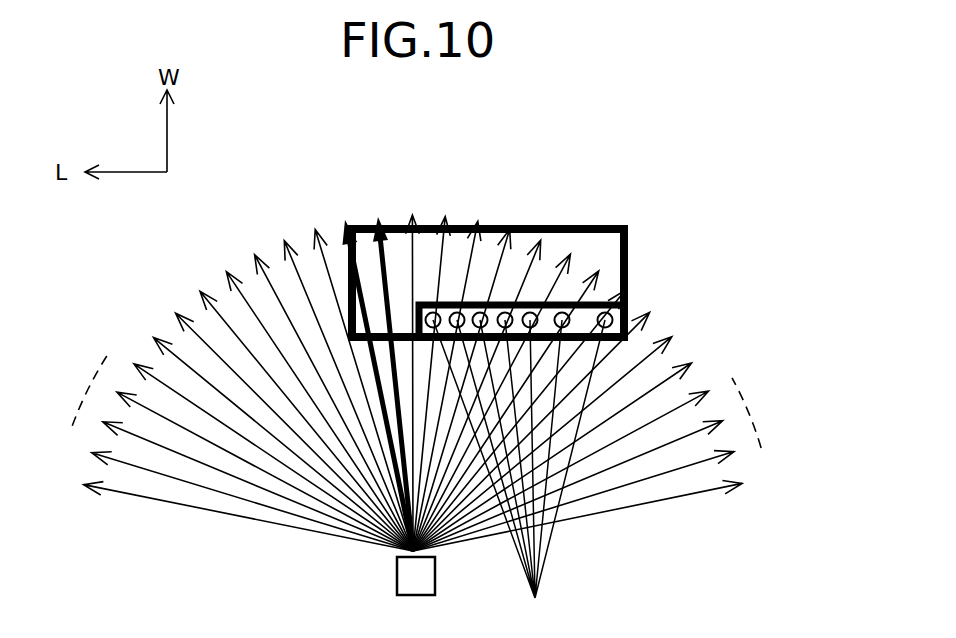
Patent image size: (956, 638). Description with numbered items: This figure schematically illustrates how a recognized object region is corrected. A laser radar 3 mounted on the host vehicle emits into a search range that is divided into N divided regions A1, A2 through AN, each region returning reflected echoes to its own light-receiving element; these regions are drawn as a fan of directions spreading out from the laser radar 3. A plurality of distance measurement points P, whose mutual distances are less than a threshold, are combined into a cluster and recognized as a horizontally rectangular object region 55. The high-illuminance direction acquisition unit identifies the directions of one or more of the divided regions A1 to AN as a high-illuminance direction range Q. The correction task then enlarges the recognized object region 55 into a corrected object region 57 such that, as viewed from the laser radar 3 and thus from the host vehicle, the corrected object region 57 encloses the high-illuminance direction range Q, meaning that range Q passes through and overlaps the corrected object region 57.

The corrected object region 57 is at (566, 227).
The object region 55 is at (606, 301).
The laser radar 3 is at (397, 575).
The high-illuminance direction range Q is at (388, 210).
The distance measurement points P is at (519, 475).
The divided region A1 is at (229, 512).
The divided region A2 is at (235, 496).
The divided region AN is at (601, 511).